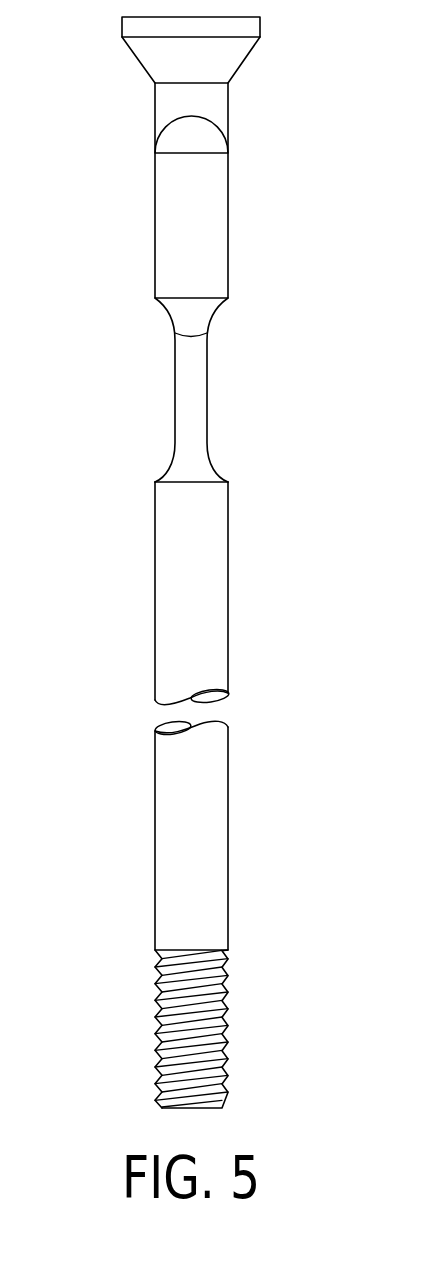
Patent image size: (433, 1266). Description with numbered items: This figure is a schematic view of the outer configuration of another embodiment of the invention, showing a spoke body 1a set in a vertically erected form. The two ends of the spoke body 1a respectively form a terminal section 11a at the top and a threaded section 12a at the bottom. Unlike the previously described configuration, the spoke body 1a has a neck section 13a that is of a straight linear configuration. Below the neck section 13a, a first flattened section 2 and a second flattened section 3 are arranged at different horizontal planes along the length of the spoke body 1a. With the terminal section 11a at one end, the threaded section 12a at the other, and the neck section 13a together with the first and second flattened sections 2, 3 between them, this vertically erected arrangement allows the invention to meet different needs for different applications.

The terminal section 11a is at (138, 31).
The neck section 13a is at (163, 125).
The first flattened section 2 is at (128, 237).
The second flattened section 3 is at (145, 412).
The spoke body 1a is at (153, 615).
The threaded section 12a is at (160, 1035).